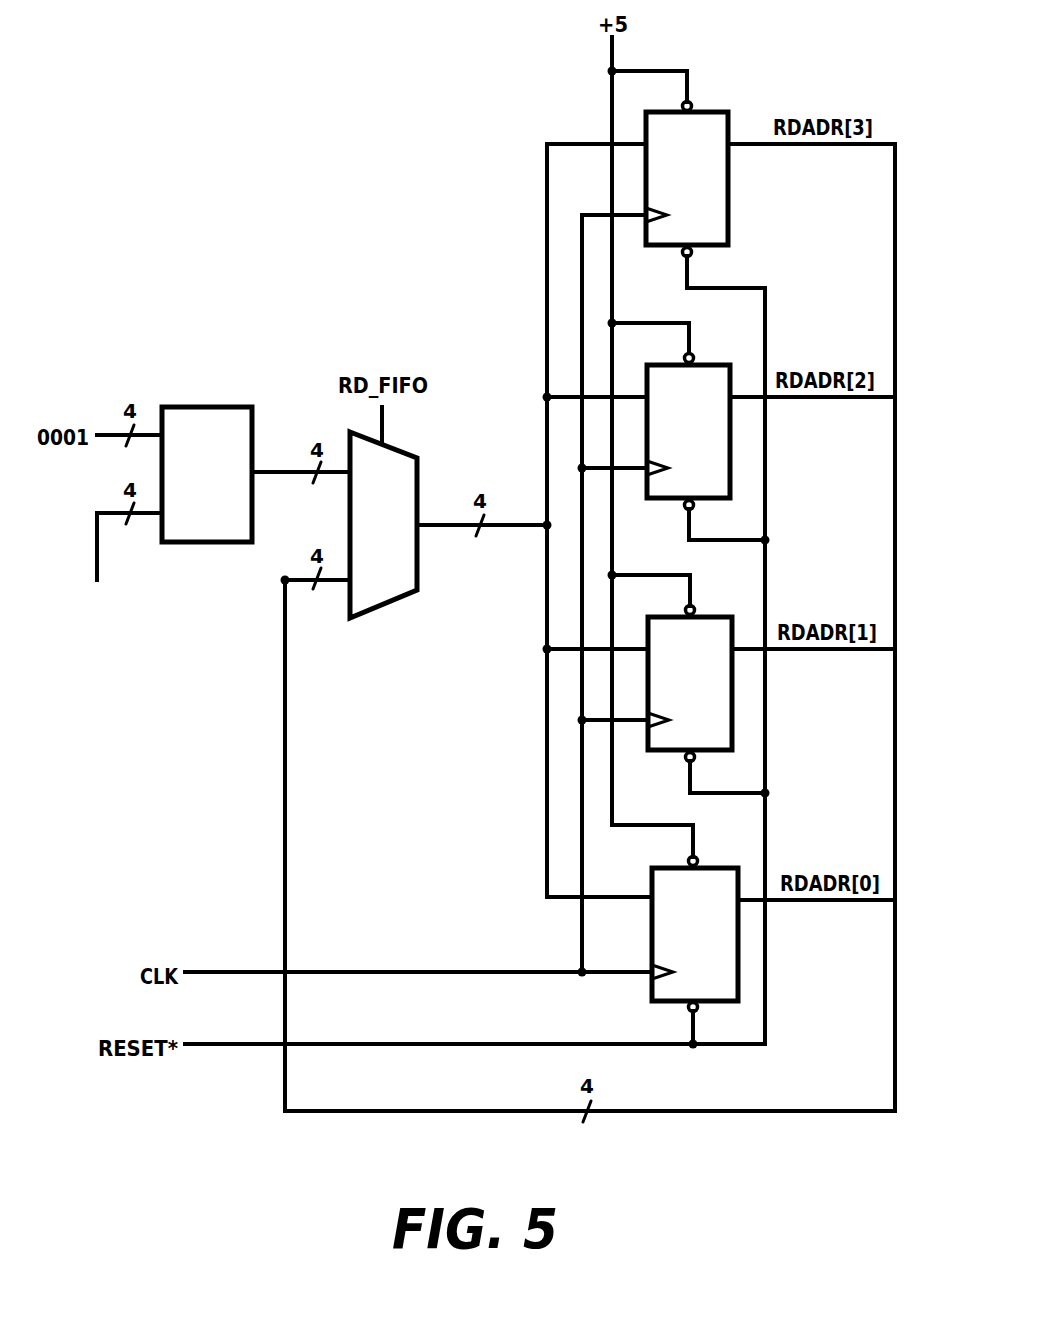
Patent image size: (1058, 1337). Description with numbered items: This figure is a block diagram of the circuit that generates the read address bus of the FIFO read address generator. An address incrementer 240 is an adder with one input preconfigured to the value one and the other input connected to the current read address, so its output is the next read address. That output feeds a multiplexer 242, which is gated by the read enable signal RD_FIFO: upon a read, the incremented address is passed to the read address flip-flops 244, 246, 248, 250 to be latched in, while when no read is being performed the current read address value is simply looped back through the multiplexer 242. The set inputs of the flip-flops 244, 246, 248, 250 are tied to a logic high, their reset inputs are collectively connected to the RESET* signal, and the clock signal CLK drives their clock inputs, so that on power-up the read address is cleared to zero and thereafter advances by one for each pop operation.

The address incrementer 240 is at (203, 407).
The multiplexer 242 is at (403, 600).
The read address flip-flop 244 is at (728, 222).
The read address flip-flop 246 is at (730, 475).
The read address flip-flop 248 is at (732, 727).
The read address flip-flop 250 is at (738, 977).